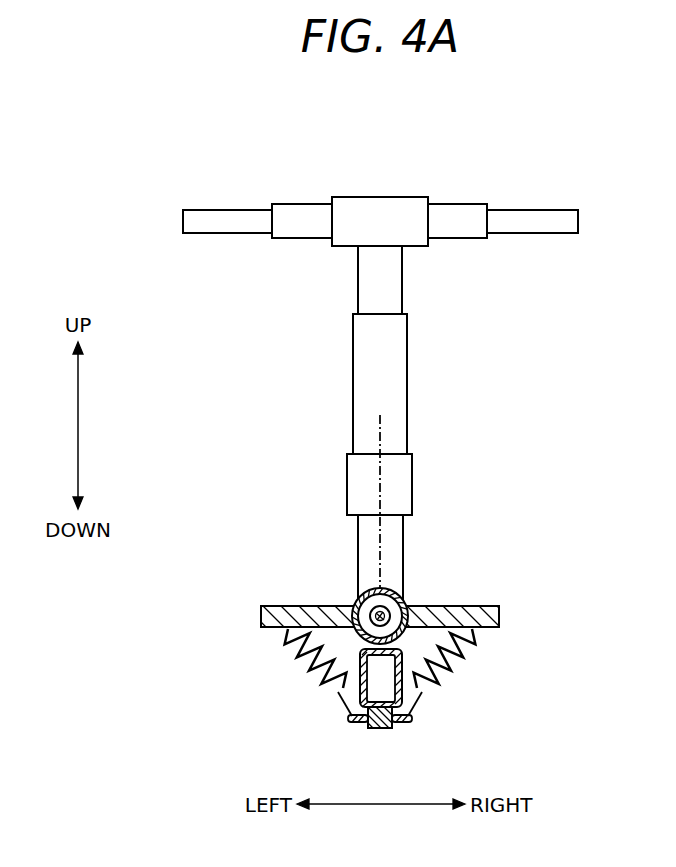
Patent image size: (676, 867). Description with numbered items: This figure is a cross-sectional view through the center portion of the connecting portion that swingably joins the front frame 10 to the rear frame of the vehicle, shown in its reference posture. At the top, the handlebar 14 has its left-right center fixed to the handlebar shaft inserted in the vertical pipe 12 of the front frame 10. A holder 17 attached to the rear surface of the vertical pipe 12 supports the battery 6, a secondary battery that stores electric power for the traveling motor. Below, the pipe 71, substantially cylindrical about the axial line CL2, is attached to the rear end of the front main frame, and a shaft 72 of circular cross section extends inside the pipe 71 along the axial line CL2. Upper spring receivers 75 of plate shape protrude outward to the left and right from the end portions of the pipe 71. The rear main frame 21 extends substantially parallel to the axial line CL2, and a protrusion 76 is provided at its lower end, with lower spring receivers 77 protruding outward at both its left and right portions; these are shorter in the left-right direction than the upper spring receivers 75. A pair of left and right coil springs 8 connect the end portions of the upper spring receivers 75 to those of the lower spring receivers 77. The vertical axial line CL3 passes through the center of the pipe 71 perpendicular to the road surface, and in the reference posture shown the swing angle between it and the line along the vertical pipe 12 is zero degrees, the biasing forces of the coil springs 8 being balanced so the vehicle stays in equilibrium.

The handlebar 14 is at (542, 210).
The vertical pipe 12 is at (402, 268).
The front frame 10 is at (424, 352).
The battery 6 is at (407, 388).
The holder 17 is at (412, 481).
The vertical axial line CL3 is at (385, 441).
The upper spring receivers 75 is at (280, 605).
The pipe 71 is at (396, 591).
The shaft 72 is at (358, 599).
The axial line CL2 is at (356, 601).
The coil springs 8 is at (302, 668).
The main frame 21 is at (404, 690).
The lower spring receivers 77 is at (360, 723).
The protrusion 76 is at (376, 728).